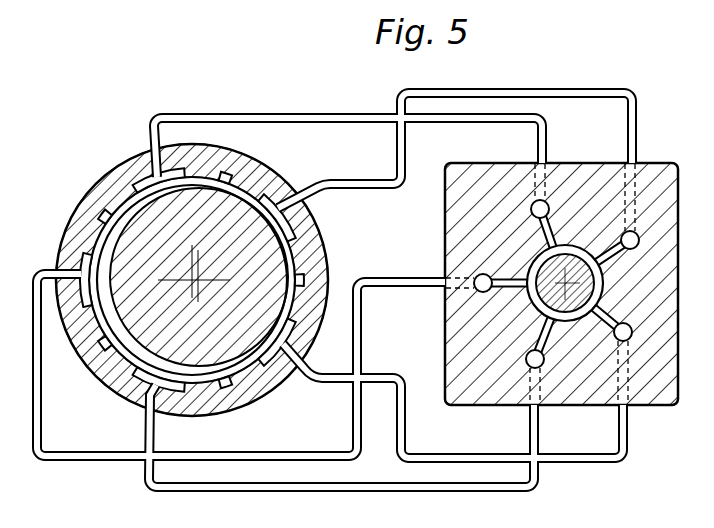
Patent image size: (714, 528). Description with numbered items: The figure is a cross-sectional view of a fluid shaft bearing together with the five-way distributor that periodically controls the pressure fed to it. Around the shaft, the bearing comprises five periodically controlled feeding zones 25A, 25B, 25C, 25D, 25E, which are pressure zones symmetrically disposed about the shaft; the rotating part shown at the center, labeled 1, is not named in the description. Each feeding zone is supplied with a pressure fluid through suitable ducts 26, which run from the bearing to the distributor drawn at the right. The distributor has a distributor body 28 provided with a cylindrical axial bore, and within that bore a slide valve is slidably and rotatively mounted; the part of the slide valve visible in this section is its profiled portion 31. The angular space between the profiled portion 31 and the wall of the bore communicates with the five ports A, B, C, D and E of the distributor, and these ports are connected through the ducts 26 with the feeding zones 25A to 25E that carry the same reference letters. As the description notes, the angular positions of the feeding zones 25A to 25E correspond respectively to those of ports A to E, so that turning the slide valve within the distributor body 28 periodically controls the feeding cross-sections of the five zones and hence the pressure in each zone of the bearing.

The rotor 1 is at (106, 265).
The periodically controlled feeding zone 25A is at (82, 262).
The periodically controlled feeding zone 25B is at (148, 158).
The periodically controlled feeding zone 25C is at (298, 190).
The periodically controlled feeding zone 25D is at (300, 342).
The periodically controlled feeding zone 25E is at (147, 398).
The ducts 26 is at (540, 93).
The distributor body 28 is at (455, 215).
The profiled portion of the slide valve 31 is at (586, 243).